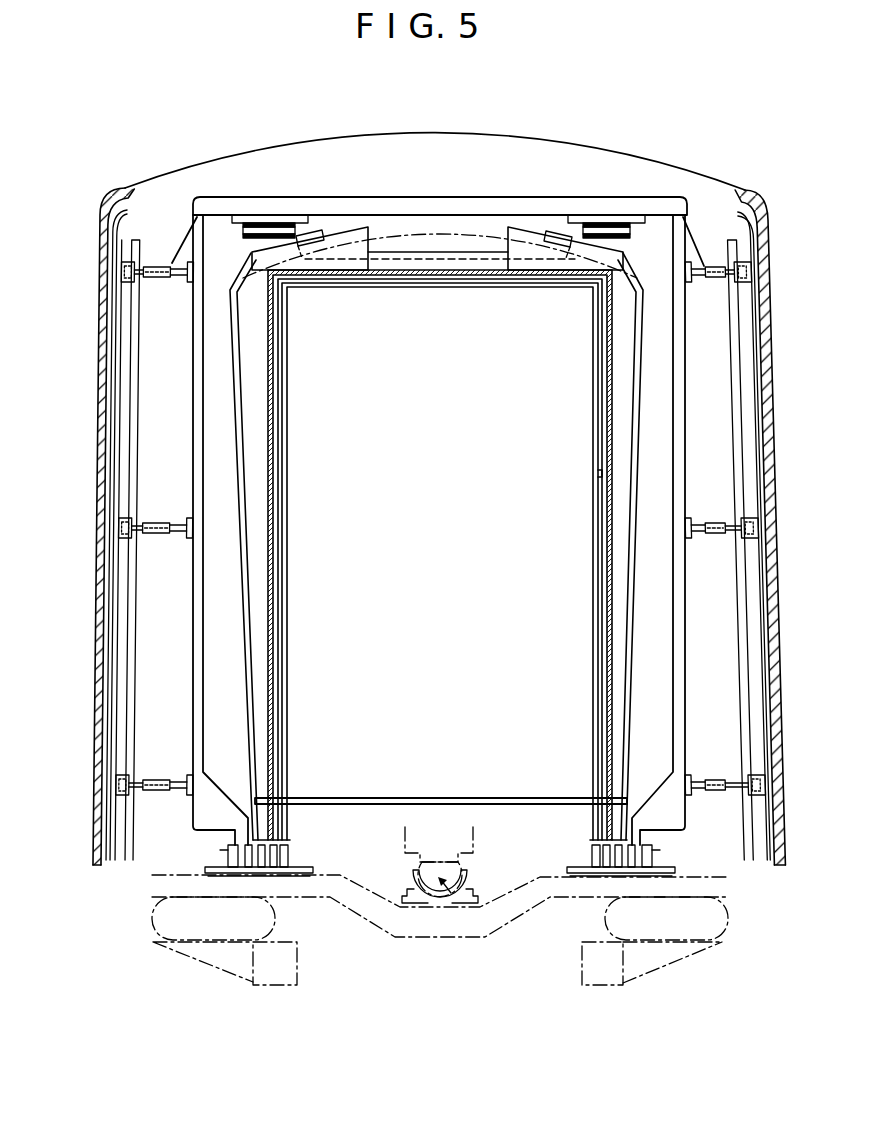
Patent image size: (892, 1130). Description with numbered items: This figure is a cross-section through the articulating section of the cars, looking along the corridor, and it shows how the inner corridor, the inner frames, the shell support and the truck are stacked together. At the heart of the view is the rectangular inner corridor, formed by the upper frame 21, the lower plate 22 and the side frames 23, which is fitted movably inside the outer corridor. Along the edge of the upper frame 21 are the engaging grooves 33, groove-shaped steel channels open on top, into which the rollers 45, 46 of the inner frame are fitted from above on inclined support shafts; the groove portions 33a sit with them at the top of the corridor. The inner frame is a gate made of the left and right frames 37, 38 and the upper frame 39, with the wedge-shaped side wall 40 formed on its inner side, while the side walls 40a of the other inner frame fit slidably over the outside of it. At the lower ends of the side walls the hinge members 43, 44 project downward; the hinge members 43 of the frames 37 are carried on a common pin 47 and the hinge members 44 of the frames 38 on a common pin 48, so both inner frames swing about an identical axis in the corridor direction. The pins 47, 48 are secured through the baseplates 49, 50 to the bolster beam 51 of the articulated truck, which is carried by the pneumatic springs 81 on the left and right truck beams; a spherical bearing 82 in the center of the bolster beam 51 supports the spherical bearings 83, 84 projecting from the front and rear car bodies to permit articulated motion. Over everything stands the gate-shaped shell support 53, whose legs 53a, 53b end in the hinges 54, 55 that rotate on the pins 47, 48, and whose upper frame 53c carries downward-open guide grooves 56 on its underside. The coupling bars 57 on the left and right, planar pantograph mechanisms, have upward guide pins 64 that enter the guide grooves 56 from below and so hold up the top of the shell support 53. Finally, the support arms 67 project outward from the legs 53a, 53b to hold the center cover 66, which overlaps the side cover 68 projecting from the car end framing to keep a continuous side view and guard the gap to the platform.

The upper frame 21 is at (425, 262).
The lower plate 22 is at (397, 798).
The side frames 23 is at (277, 440).
The engaging grooves 33 is at (340, 245).
The clamp portion 33a is at (360, 240).
The left and right frame 37 is at (633, 578).
The left and right frame 38 is at (240, 572).
The upper frame 39 is at (455, 240).
The side wall 40 is at (600, 512).
The side walls 40a is at (600, 474).
The hinge members 43 is at (606, 868).
The hinge members 44 is at (274, 868).
The roller 45 is at (562, 243).
The roller 46 is at (305, 244).
The common pin 47 is at (594, 848).
The common pin 48 is at (296, 848).
The baseplate 49 is at (572, 867).
The baseplate 50 is at (308, 867).
The bolster beam 51 is at (270, 940).
The shell support 53 is at (438, 469).
The leg 53a is at (678, 393).
The leg 53b is at (198, 393).
The upper frame 53c is at (418, 213).
The hinge 54 is at (646, 868).
The hinge 55 is at (244, 868).
The guide grooves 56 is at (242, 214).
The coupling bar 57 is at (275, 225).
The guide pins 64 is at (255, 225).
The center cover 66 is at (115, 347).
The support arms 67 is at (158, 520).
The side cover 68 is at (103, 306).
The pneumatic springs 81 is at (152, 918).
The spherical bearing 82 is at (468, 898).
The spherical bearing 83 is at (448, 900).
The spherical bearing 84 is at (421, 901).